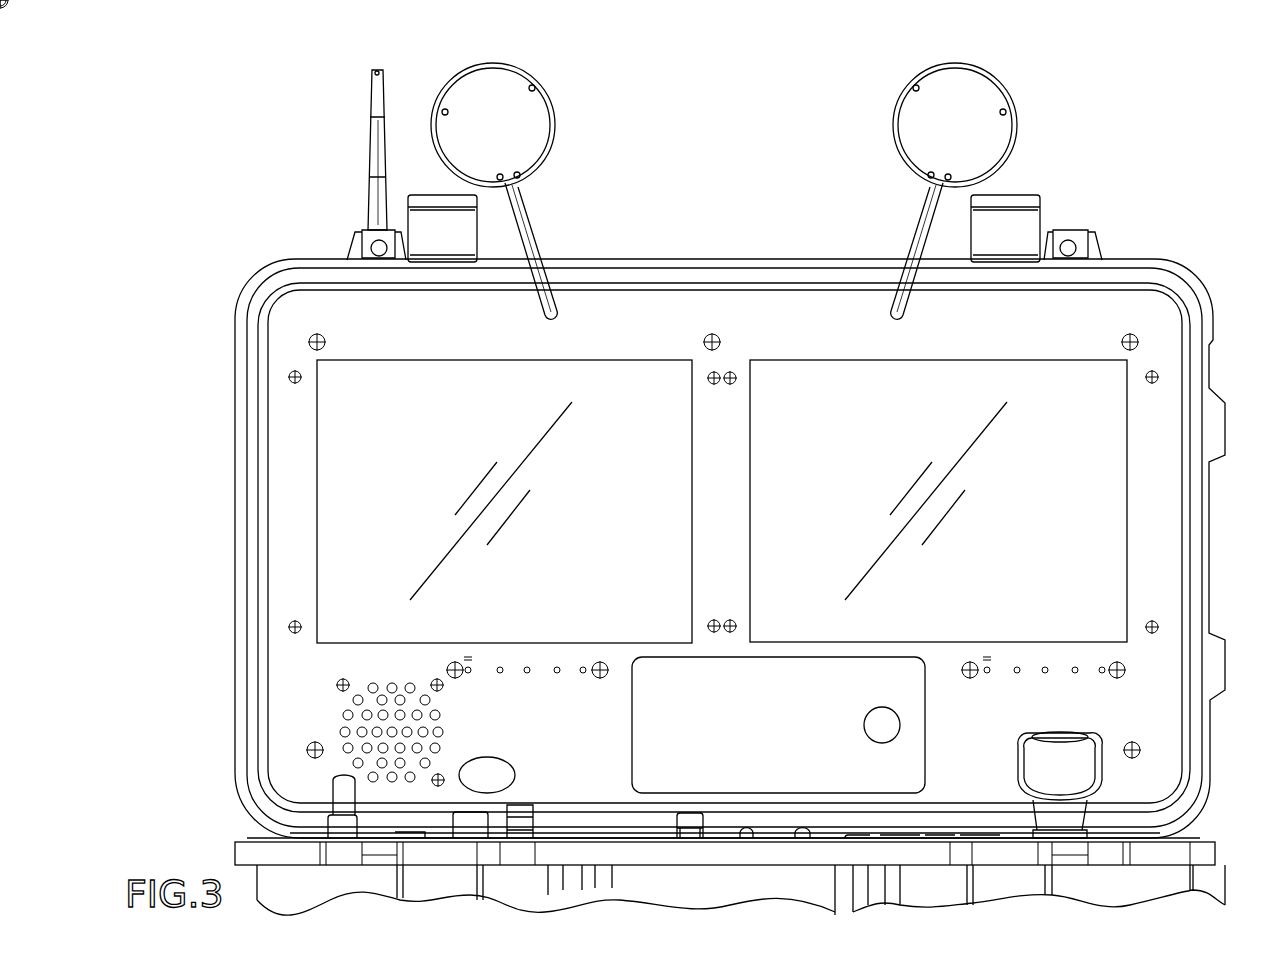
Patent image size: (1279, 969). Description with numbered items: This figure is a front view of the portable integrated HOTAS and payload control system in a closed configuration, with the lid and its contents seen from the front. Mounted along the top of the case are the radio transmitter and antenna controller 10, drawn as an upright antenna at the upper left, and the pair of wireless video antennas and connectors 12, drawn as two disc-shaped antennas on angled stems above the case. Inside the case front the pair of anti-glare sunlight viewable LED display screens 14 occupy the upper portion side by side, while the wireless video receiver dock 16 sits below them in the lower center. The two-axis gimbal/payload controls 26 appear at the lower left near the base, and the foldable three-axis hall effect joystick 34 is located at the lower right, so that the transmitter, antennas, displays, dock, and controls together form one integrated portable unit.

The radio transmitter and antenna controller 10 is at (365, 190).
The pair of wireless video antennas and connectors 12 is at (548, 158).
The pair of anti-glare sunlight viewable LED display screens 14 is at (597, 363).
The wireless video receiver dock 16 is at (928, 740).
The two-axis gimbal/payload controls 26 is at (340, 800).
The foldable three-axis hall effect joystick 34 is at (1103, 778).